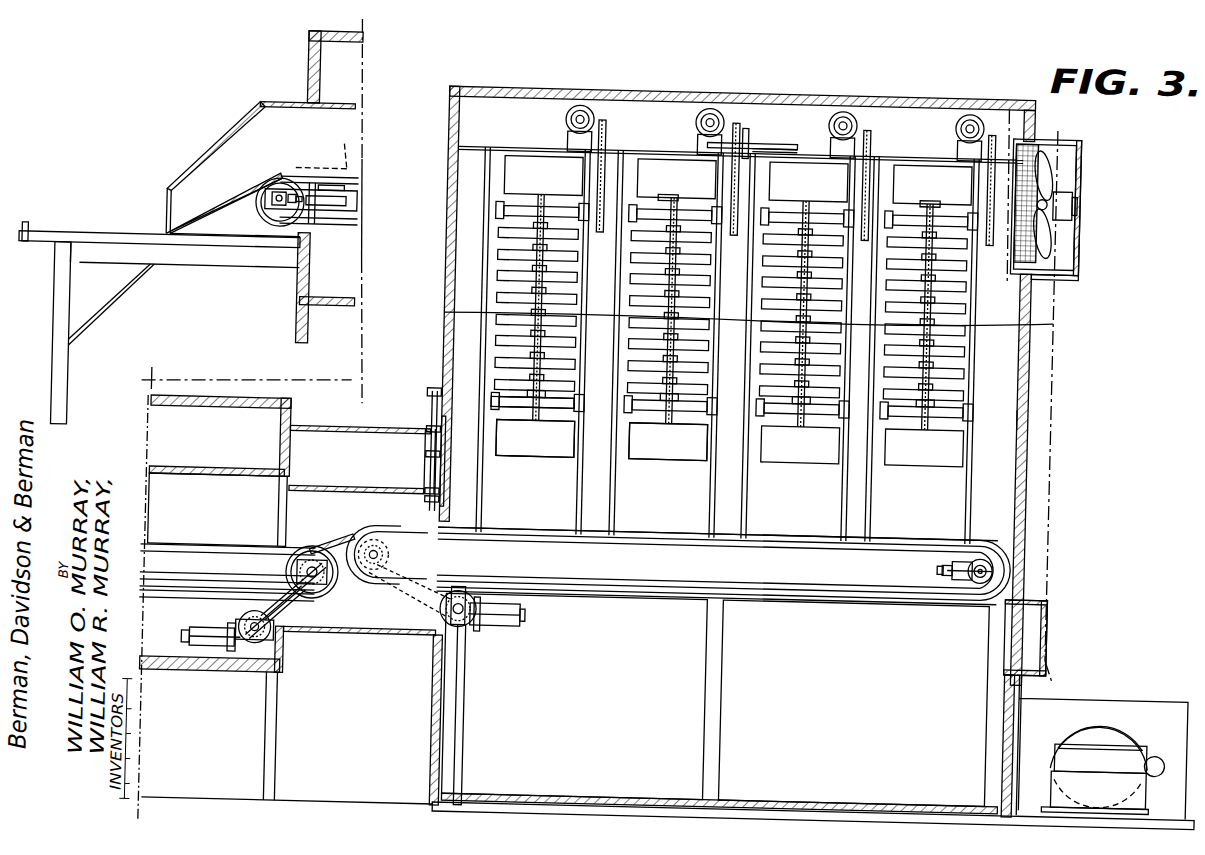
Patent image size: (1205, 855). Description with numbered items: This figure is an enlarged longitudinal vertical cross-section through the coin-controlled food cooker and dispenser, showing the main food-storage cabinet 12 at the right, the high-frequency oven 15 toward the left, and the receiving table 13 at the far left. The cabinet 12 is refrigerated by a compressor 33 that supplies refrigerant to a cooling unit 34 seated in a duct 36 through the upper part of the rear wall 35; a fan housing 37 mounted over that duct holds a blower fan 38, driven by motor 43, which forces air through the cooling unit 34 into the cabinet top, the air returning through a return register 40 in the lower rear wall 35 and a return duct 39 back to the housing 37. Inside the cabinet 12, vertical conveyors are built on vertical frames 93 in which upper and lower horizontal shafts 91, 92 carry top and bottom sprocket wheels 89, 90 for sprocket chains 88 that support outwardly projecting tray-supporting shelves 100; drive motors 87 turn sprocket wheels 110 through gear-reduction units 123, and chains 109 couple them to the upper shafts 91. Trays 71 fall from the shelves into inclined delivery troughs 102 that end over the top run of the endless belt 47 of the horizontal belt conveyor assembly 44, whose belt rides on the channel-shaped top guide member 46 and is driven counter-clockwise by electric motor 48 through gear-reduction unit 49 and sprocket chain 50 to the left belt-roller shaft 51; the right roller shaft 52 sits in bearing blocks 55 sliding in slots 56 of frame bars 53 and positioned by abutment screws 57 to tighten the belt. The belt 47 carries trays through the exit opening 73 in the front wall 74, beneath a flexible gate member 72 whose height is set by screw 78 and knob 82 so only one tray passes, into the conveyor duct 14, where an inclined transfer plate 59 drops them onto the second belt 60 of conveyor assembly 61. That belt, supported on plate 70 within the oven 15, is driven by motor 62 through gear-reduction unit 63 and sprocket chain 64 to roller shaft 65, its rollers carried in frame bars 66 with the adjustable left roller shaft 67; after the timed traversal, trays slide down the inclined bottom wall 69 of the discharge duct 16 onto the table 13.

The main food-storage cabinet 12 is at (445, 92).
The receiving table 13 is at (40, 262).
The conveyor duct 14 is at (330, 641).
The high-frequency oven 15 is at (299, 44).
The discharge duct 16 is at (230, 125).
The refrigeration compressor 33 is at (1147, 716).
The cooling unit 34 is at (1012, 252).
The rear wall 35 is at (1016, 390).
The duct 36 is at (1022, 128).
The fan housing 37 is at (1055, 270).
The blower fan 38 is at (1046, 168).
The return duct 39 is at (1052, 478).
The return register 40 is at (1015, 648).
The driving motor 43 is at (1058, 208).
The belt conveyor assembly 44 is at (651, 604).
The top guide member 46 is at (590, 530).
The endless belt 47 is at (388, 537).
The electric motor 48 is at (490, 628).
The gear-reduction unit 49 is at (470, 660).
The sprocket chain 50 is at (410, 595).
The belt-roller shaft 51 is at (372, 578).
The right end belt-roller shaft 52 is at (960, 572).
The belt-conveyor frame bars 53 is at (830, 598).
The bearing blocks 55 is at (983, 550).
The longitudinal slots 56 is at (950, 568).
The abutment screws 57 is at (940, 562).
The transfer plate 59 is at (335, 560).
The second horizontal conveyor belt 60 is at (338, 188).
The belt-conveyor assembly 61 is at (177, 616).
The electric motor 62 is at (213, 660).
The gear-reduction unit 63 is at (260, 652).
The sprocket chain 64 is at (262, 615).
The right end transverse roller shaft 65 is at (305, 600).
The frame bars 66 is at (340, 212).
The left end belt-roller shaft 67 is at (273, 200).
The bottom wall 69 is at (226, 208).
The supporting plate 70 is at (340, 197).
The tray-like receptacles 71 is at (322, 140).
The gate member 72 is at (442, 510).
The exit opening 73 is at (447, 480).
The front wall 74 is at (441, 316).
The vertical screw member 78 is at (430, 414).
The top adjusting knob 82 is at (426, 395).
The drive motors 87 is at (568, 106).
The sprocket chains 88 is at (930, 205).
The top sprocket wheels 89 is at (662, 197).
The bottom sprocket wheels 90 is at (526, 416).
The upper horizontal shafts 91 is at (480, 212).
The lower horizontal shafts 92 is at (490, 404).
The vertical frames 93 is at (478, 340).
The tray-supporting shelf 100 is at (650, 458).
The delivery troughs 102 is at (618, 462).
The sprocket chains 109 is at (752, 145).
The sprocket wheels 110 is at (738, 125).
The gear-reduction units 123 is at (700, 142).